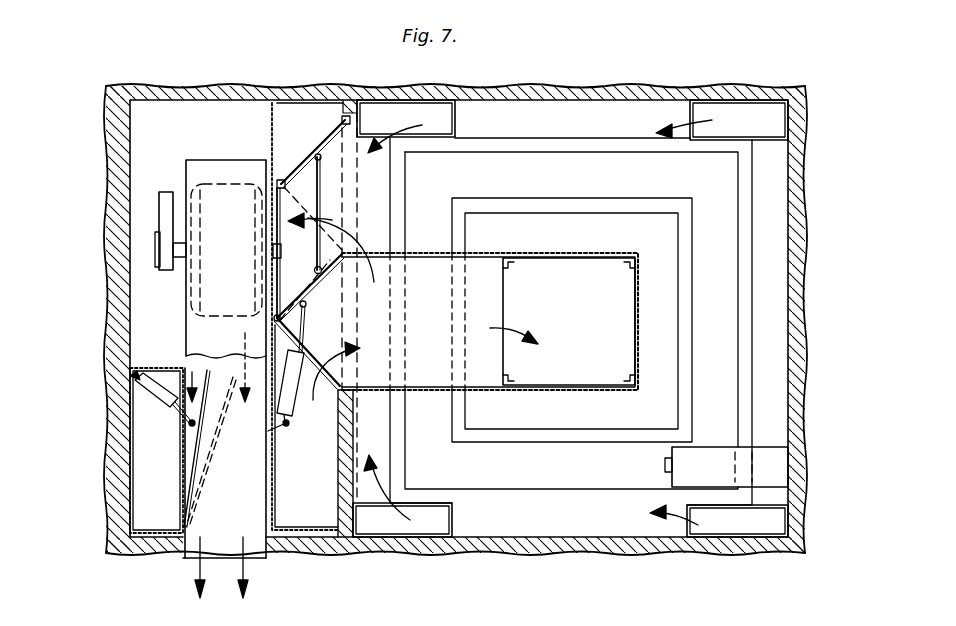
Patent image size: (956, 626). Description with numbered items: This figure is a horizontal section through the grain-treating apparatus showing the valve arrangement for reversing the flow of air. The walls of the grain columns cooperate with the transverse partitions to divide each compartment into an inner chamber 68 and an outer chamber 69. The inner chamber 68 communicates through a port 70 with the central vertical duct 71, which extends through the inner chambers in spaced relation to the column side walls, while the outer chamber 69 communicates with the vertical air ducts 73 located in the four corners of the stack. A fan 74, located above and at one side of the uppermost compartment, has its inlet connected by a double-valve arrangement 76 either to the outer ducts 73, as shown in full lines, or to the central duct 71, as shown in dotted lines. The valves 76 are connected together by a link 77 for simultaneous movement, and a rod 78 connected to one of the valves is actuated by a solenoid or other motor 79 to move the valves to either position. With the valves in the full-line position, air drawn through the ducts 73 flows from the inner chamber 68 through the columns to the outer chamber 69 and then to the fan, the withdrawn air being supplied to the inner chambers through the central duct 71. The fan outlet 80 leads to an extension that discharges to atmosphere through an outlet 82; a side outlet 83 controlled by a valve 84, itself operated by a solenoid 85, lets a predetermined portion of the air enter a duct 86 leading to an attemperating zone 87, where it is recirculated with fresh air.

The inner chamber 68 is at (660, 255).
The outer chamber 69 is at (768, 220).
The port 70 is at (572, 116).
The central vertical duct 71 is at (620, 294).
The vertical air duct 73 is at (393, 108).
The fan 74 is at (215, 160).
The double-valve arrangement 76 is at (343, 121).
The link 77 is at (765, 448).
The rod 78 is at (303, 322).
The motor 79 is at (290, 425).
The fan outlet 80 is at (220, 343).
The outlet 82 is at (266, 558).
The side outlet 83 is at (188, 470).
The valve 84 is at (218, 462).
The solenoid 85 is at (157, 396).
The duct 86 is at (140, 455).
The attemperating zone 87 is at (258, 484).